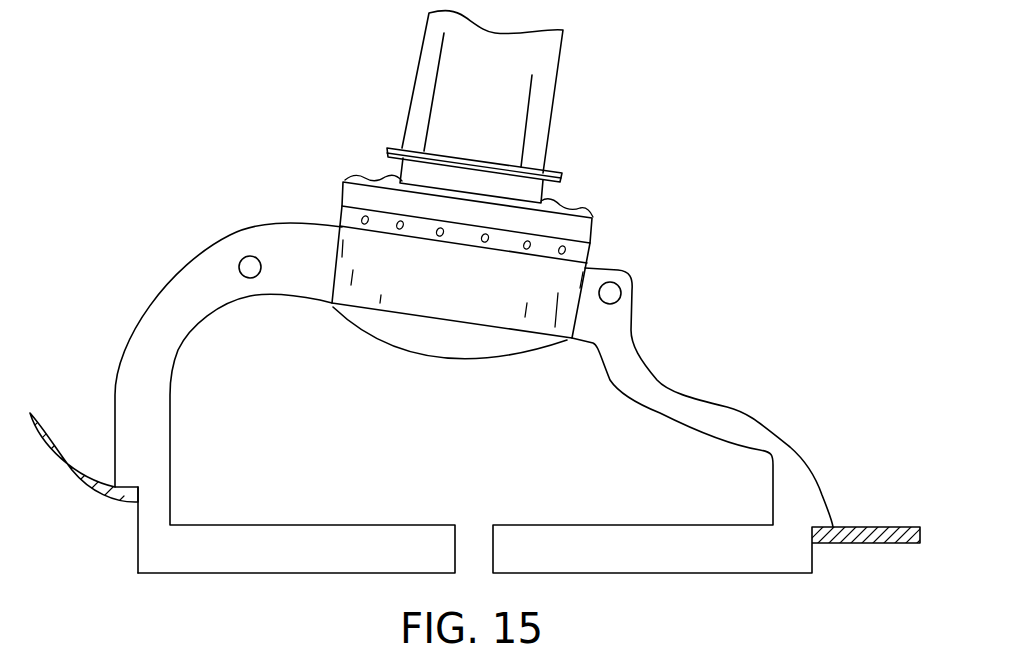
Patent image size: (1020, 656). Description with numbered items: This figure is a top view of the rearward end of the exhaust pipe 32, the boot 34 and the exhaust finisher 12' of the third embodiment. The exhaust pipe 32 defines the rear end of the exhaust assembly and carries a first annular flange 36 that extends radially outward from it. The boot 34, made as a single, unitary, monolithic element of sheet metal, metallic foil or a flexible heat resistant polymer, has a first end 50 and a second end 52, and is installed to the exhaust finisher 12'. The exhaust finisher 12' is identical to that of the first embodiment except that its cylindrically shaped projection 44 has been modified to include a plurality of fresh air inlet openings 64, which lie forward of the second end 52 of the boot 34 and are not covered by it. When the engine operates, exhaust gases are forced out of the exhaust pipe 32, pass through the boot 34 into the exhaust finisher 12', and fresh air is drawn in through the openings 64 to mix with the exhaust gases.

The exhaust finisher 12' is at (477, 403).
The exhaust pipe 32 is at (558, 67).
The boot 34 is at (577, 202).
The first annular flange 36 is at (561, 172).
The cylindrically shaped projection 44 is at (342, 215).
The first end 50 is at (397, 170).
The second end 52 is at (343, 190).
The fresh air inlet openings 64 is at (366, 224).